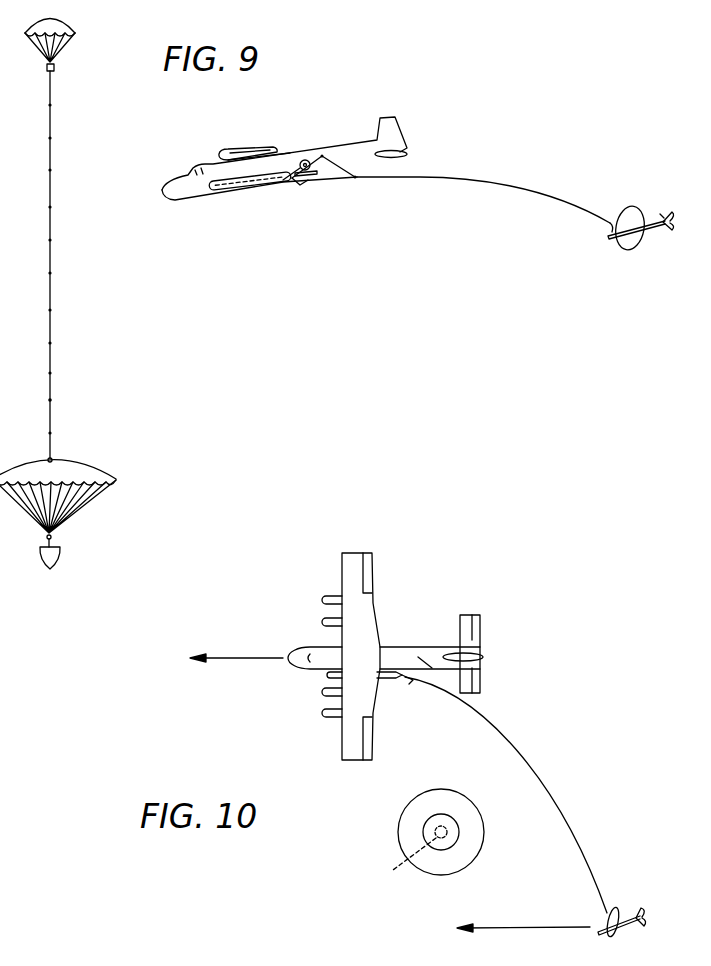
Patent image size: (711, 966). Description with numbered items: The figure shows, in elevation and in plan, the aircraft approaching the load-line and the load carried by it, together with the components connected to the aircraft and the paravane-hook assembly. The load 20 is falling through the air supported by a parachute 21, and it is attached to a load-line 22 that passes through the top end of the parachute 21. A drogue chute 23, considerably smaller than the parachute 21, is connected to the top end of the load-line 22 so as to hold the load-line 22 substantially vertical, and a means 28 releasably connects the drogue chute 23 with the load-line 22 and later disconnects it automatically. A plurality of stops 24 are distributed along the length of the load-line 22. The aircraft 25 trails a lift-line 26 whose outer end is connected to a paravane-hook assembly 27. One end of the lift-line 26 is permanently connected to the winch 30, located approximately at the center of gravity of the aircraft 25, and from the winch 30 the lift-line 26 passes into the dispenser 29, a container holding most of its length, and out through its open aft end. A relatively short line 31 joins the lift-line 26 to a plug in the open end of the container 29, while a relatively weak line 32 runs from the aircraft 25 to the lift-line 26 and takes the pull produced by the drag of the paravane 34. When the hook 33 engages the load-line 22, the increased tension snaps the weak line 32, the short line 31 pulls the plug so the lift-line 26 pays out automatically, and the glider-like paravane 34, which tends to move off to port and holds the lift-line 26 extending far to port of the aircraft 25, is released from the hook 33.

In FIG. 9, the load 20 is at (58, 557).
In FIG. 10, the load 20 is at (420, 858).
In FIG. 9, the parachute 21 is at (116, 479).
In FIG. 10, the parachute 21 is at (477, 857).
In FIG. 9, the load-line 22 is at (51, 357).
In FIG. 9, the drogue chute 23 is at (58, 30).
In FIG. 10, the drogue chute 23 is at (458, 827).
In FIG. 9, the stops 24 is at (51, 400).
In FIG. 9, the aircraft 25 is at (197, 165).
In FIG. 10, the aircraft 25 is at (390, 647).
In FIG. 9, the lift-line 26 is at (507, 187).
In FIG. 10, the lift-line 26 is at (565, 803).
In FIG. 9, the paravane-hook assembly 27 is at (633, 208).
In FIG. 9, the means for releasably connecting the drogue chute with the load-line 28 is at (55, 70).
In FIG. 9, the dispenser 29 is at (247, 183).
In FIG. 10, the dispenser 29 is at (333, 675).
In FIG. 9, the winch 30 is at (305, 160).
In FIG. 9, the short line 31 is at (300, 185).
In FIG. 10, the short line 31 is at (411, 682).
In FIG. 9, the relatively weak line 32 is at (330, 160).
In FIG. 10, the relatively weak line 32 is at (418, 657).
In FIG. 9, the hook 33 is at (612, 232).
In FIG. 10, the hook 33 is at (605, 921).
In FIG. 9, the paravane 34 is at (633, 250).
In FIG. 10, the paravane 34 is at (626, 927).